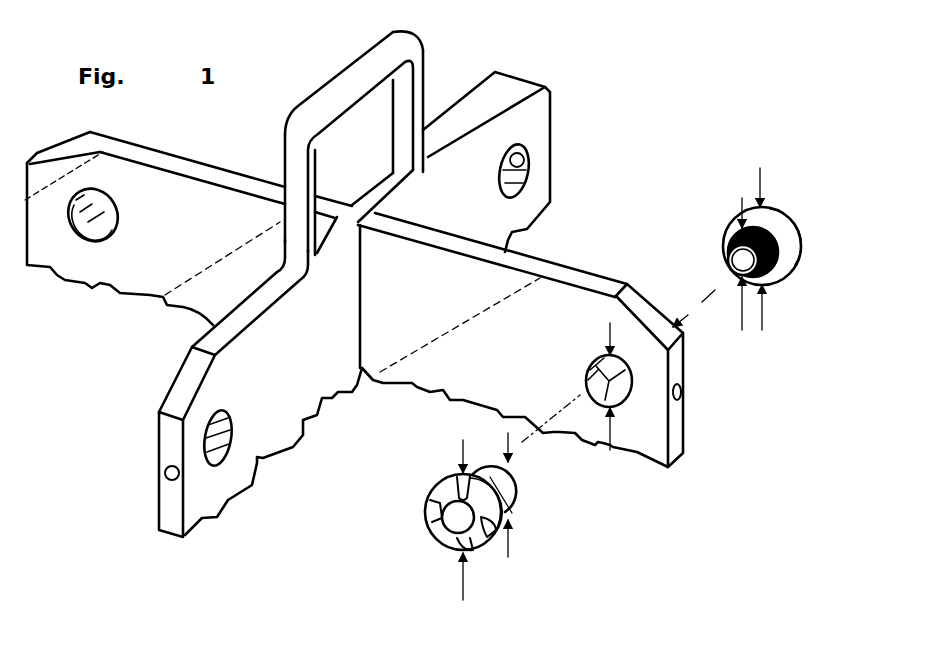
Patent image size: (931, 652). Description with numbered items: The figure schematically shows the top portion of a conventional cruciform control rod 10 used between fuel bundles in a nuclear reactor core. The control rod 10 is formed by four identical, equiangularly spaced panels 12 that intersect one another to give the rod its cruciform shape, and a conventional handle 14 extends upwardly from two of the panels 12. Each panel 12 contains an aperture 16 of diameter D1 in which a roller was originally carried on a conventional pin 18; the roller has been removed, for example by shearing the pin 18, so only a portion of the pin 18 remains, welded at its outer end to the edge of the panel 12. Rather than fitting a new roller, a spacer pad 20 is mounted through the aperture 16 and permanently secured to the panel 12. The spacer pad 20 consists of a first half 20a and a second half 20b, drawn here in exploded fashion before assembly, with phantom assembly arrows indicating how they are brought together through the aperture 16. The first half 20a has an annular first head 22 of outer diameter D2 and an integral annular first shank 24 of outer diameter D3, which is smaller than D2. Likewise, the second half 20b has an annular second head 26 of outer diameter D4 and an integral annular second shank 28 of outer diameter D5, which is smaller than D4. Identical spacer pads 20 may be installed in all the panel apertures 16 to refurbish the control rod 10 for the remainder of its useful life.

The cruciform control rod 10 is at (447, 85).
The panels 12 is at (323, 202).
The handle 14 is at (370, 68).
The aperture 16 is at (500, 193).
The pin 18 is at (683, 395).
The spacer pad 20 is at (743, 233).
The first half 20a is at (722, 227).
The first head 22 is at (800, 247).
The first shank 24 is at (783, 282).
The second half 20b is at (471, 472).
The second head 26 is at (435, 492).
The second shank 28 is at (510, 490).
The aperture diameter D1 is at (610, 332).
The first head outer diameter D2 is at (758, 182).
The first shank outer diameter D3 is at (742, 310).
The second head outer diameter D4 is at (462, 583).
The second shank outer diameter D5 is at (510, 545).